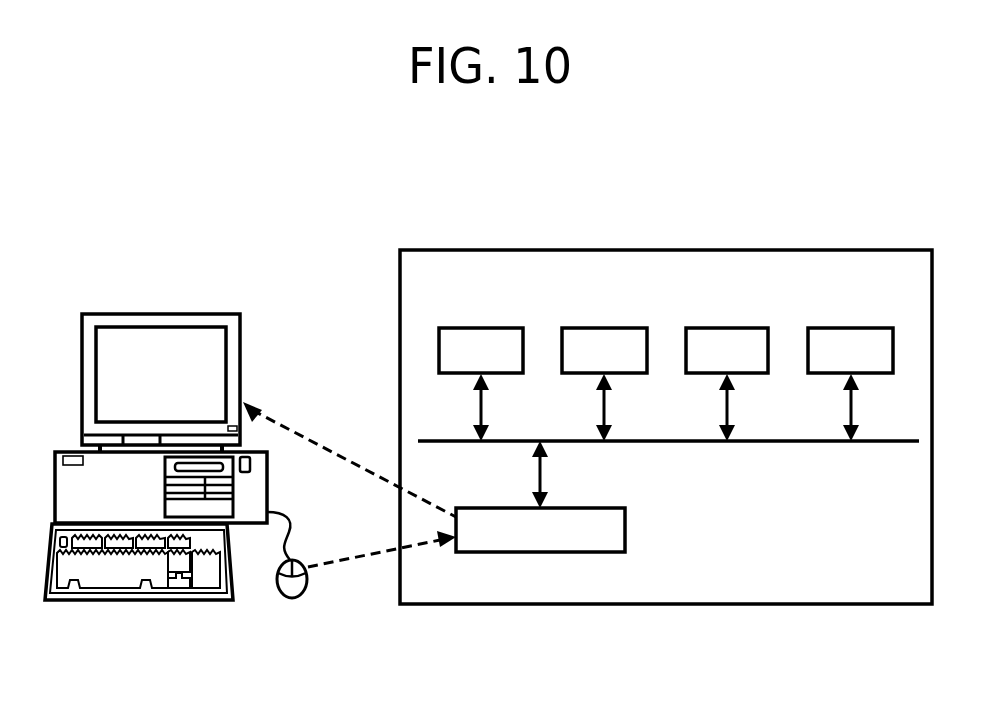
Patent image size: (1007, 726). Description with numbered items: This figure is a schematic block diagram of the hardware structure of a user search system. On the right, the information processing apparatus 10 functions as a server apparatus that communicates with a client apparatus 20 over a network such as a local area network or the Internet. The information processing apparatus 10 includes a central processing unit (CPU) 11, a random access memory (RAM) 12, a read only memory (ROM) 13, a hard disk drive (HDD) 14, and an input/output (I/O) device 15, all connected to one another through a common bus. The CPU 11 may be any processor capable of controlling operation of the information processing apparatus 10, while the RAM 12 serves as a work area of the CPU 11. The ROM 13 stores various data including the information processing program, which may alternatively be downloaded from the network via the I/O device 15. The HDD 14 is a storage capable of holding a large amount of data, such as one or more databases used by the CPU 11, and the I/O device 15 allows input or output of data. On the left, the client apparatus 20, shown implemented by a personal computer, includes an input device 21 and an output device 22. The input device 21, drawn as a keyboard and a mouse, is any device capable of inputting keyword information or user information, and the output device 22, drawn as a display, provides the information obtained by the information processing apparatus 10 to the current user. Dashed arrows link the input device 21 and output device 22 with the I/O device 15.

The information processing apparatus 10 is at (906, 250).
The central processing unit 11 is at (507, 328).
The random access memory 12 is at (632, 328).
The read only memory 13 is at (754, 328).
The hard disk drive 14 is at (879, 328).
The input/output device 15 is at (608, 508).
The client apparatus 20 is at (178, 441).
The input device 21 is at (292, 600).
The output device 22 is at (213, 360).